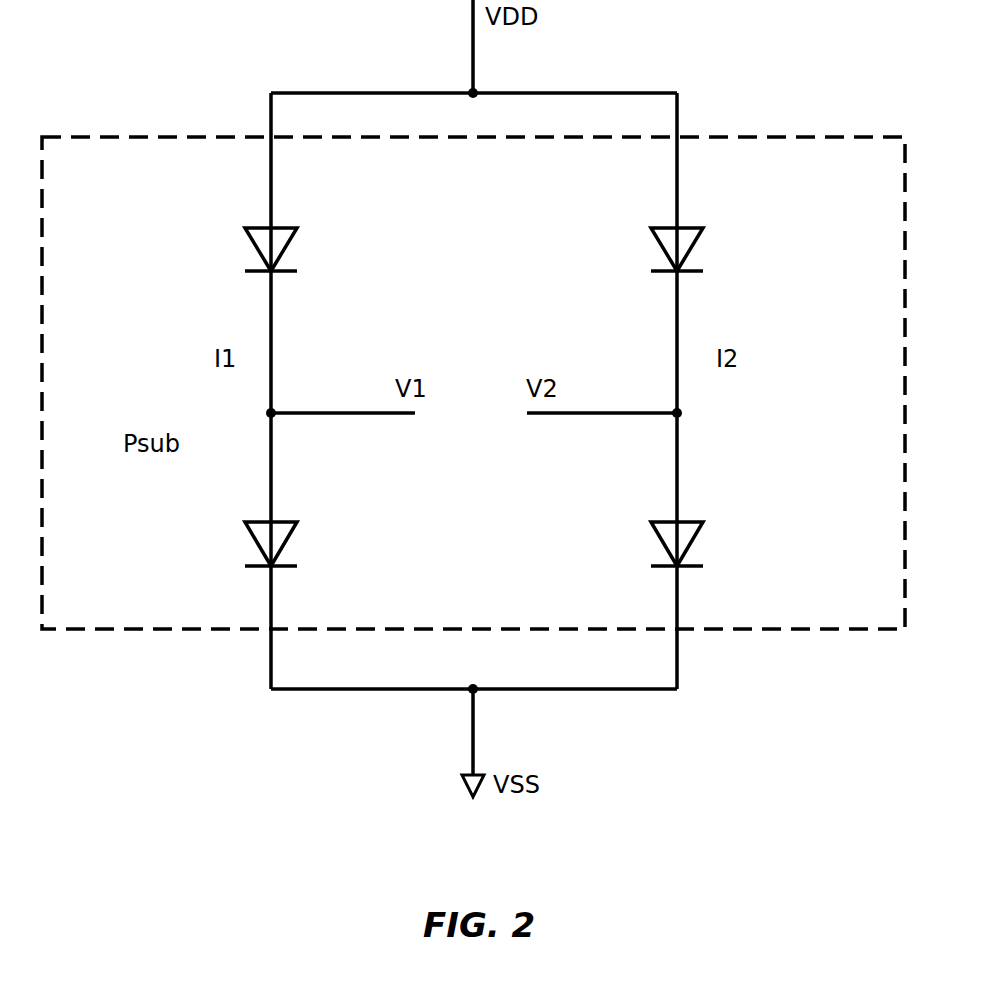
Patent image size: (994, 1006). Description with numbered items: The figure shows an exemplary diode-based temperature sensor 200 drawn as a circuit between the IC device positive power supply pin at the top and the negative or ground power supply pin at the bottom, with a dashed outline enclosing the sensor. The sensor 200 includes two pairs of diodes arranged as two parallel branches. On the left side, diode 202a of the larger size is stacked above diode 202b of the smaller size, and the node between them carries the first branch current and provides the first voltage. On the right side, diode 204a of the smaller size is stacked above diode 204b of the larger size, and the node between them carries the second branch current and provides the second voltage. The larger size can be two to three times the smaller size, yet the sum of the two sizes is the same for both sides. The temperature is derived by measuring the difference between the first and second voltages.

The diode-based temperature sensor 200 is at (822, 137).
The diode 202a is at (258, 228).
The diode 202b is at (258, 522).
The diode 204a is at (688, 228).
The diode 204b is at (688, 522).